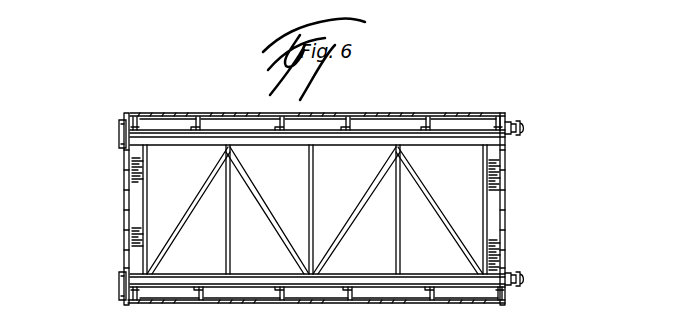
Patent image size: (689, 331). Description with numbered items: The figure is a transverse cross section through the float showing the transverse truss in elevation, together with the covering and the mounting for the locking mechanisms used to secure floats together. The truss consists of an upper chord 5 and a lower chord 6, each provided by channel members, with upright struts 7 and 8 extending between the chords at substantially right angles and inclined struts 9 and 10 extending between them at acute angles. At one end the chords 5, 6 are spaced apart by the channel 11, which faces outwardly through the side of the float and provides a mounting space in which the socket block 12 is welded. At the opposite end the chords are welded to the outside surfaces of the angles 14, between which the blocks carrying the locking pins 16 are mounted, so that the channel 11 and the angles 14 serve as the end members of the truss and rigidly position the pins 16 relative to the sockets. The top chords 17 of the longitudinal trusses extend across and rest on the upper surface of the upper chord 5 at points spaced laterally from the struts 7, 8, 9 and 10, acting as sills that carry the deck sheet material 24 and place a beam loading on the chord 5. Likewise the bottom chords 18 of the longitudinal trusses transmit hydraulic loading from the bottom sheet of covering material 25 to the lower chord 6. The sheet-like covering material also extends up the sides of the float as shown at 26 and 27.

The upper chord 5 is at (365, 134).
The lower chord 6 is at (382, 282).
The upright strut 7 is at (233, 222).
The upright strut 8 is at (317, 197).
The inclined strut 9 is at (182, 223).
The inclined strut 10 is at (262, 187).
The channel 11 is at (133, 227).
The socket block 12 is at (120, 132).
The angle 14 is at (498, 158).
The locking pin 16 is at (524, 127).
The top chord 17 is at (262, 117).
The bottom chord 18 is at (205, 292).
The sheet material 24 is at (448, 113).
The bottom sheet of covering material 25 is at (478, 300).
The side covering material 26 is at (505, 235).
The side covering material 27 is at (125, 203).